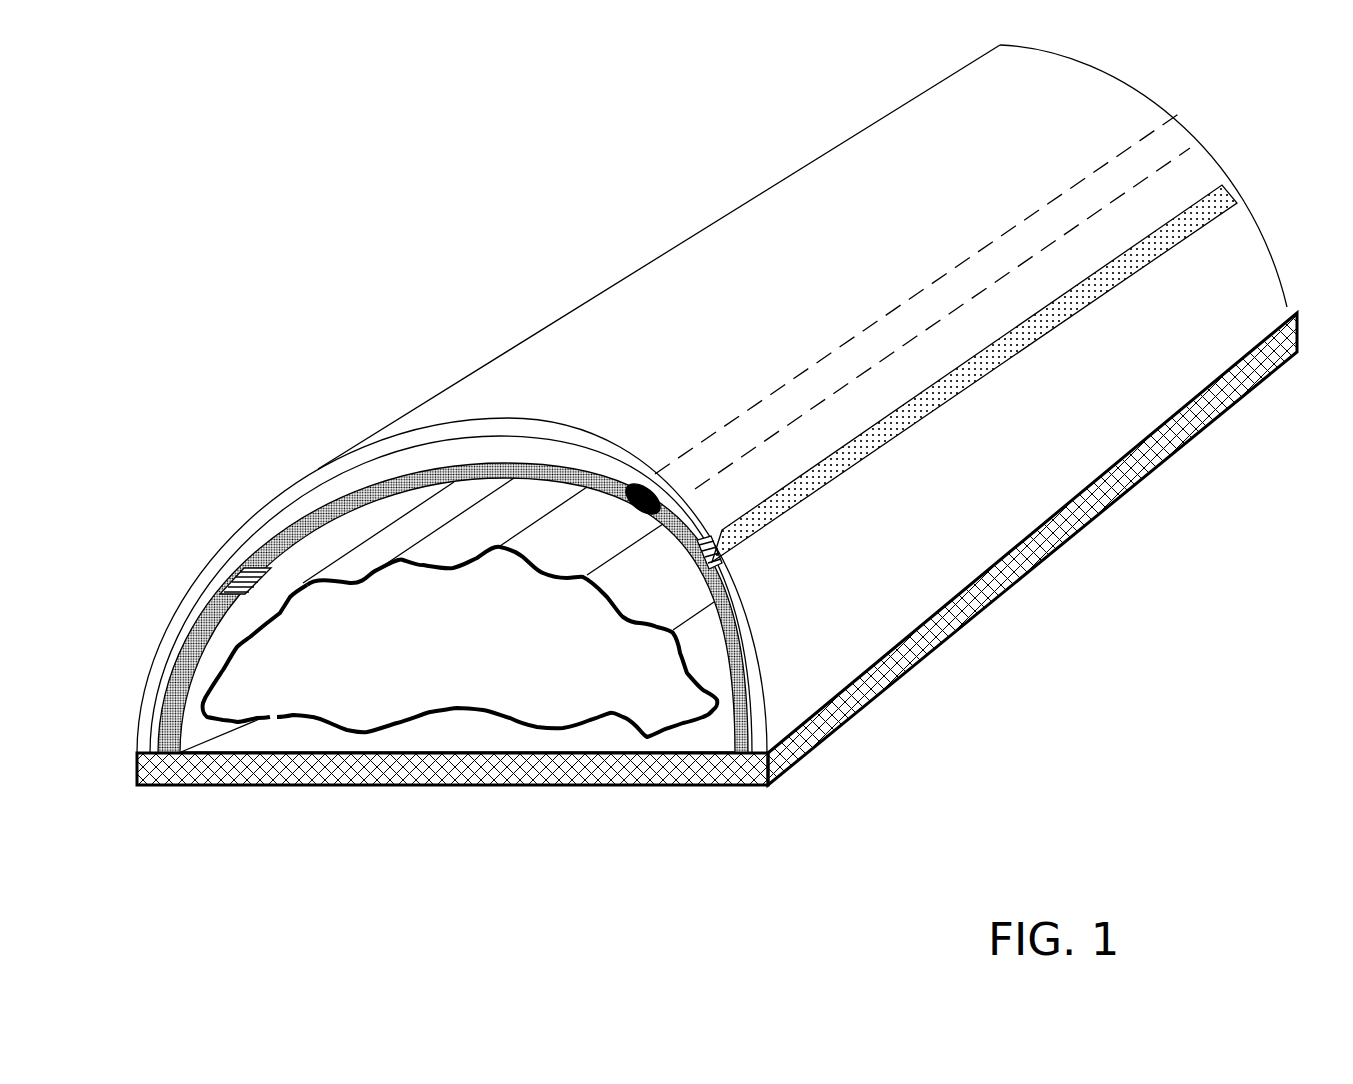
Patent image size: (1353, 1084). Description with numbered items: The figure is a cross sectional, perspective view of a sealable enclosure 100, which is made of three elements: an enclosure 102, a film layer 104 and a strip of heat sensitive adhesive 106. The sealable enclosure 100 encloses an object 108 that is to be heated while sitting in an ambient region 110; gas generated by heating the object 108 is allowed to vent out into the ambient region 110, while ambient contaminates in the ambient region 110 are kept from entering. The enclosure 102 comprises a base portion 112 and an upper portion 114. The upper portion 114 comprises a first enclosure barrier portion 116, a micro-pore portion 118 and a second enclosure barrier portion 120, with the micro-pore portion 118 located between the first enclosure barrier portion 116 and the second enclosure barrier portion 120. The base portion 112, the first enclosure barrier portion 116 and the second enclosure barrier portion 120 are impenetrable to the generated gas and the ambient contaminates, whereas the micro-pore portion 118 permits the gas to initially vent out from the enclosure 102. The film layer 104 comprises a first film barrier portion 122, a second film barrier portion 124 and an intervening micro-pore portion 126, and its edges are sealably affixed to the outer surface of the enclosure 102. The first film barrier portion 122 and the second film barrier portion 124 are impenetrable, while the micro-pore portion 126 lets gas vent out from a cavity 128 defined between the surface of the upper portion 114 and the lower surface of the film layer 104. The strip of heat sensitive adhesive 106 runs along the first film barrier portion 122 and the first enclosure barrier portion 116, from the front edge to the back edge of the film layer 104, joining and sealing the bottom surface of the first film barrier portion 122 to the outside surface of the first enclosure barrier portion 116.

The sealable enclosure 100 is at (1106, 645).
The enclosure 102 is at (717, 613).
The film layer 104 is at (504, 338).
The strip of heat sensitive adhesive 106 is at (648, 485).
The object 108 is at (458, 660).
The ambient region 110 is at (326, 105).
The base portion 112 is at (262, 778).
The upper portion 114 is at (714, 742).
The first enclosure barrier portion 116 is at (512, 466).
The micro-pore portion 118 is at (232, 577).
The second enclosure barrier portion 120 is at (197, 625).
The first film barrier portion 122 is at (460, 397).
The second film barrier portion 124 is at (882, 622).
The micro-pore portion 126 is at (828, 490).
The cavity 128 is at (346, 484).